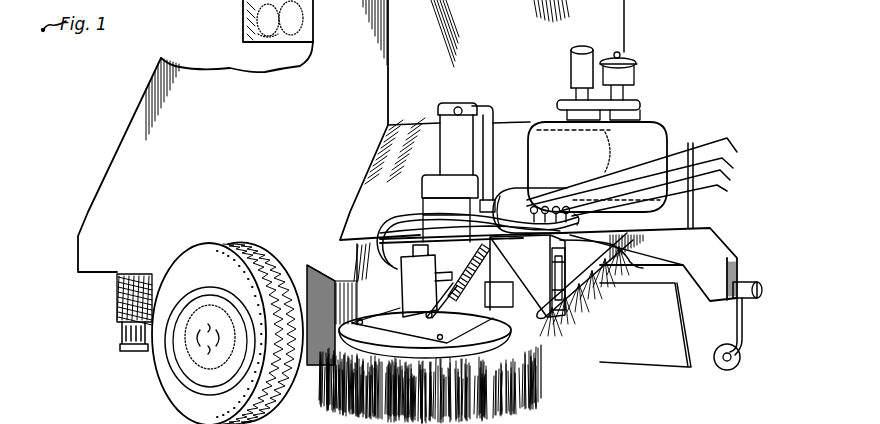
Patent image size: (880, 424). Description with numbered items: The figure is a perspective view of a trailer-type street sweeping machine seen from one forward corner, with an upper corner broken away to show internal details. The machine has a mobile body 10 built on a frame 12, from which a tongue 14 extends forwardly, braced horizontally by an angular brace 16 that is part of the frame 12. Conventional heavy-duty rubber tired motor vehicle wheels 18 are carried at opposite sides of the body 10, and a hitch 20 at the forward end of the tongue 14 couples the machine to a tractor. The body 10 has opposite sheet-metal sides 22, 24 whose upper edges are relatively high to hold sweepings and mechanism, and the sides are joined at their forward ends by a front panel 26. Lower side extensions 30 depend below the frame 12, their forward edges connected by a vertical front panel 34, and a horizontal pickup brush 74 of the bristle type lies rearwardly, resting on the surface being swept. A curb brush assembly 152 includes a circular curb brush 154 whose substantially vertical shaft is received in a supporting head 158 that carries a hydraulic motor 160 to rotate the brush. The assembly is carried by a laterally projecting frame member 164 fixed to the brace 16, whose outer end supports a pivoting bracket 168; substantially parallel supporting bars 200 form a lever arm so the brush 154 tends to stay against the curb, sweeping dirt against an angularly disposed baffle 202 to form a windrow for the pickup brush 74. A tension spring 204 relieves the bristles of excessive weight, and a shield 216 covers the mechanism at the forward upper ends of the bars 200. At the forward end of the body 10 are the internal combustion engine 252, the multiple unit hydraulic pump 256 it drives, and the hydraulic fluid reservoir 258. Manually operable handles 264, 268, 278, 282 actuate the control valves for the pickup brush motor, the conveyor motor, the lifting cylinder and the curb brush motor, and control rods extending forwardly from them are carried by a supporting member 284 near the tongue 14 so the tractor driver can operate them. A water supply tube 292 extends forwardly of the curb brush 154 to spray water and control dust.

The mobile body 10 is at (103, 165).
The frame 12 is at (353, 258).
The tongue 14 is at (723, 235).
The angular brace 16 is at (437, 228).
The rubber tired motor vehicle wheels 18 is at (183, 392).
The hitch 20 is at (757, 281).
The side 22 is at (257, 156).
The side 24 is at (623, 40).
The front panel 26 is at (521, 56).
The lower side extensions 30 is at (320, 357).
The vertical front panel 34 is at (384, 309).
The pickup brush 74 is at (118, 300).
The curb brush assembly 152 is at (564, 376).
The curb brush 154 is at (537, 393).
The supporting head 158 is at (429, 281).
The hydraulic motor 160 is at (432, 256).
The frame member 164 is at (632, 270).
The bracket 168 is at (552, 270).
The supporting bars 200 is at (513, 293).
The baffle 202 is at (675, 352).
The tension spring 204 is at (470, 228).
The shield 216 is at (525, 265).
The internal combustion engine 252 is at (665, 132).
The multiple unit hydraulic pump 256 is at (514, 190).
The reservoir 258 is at (432, 178).
The control handle 264 is at (728, 136).
The manual actuating handle 268 is at (734, 166).
The manually actuated handle 278 is at (731, 180).
The manually actuated handle 282 is at (728, 191).
The supporting member 284 is at (688, 211).
The water supply tube 292 is at (622, 270).